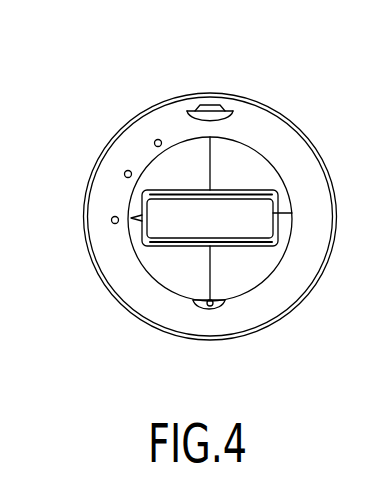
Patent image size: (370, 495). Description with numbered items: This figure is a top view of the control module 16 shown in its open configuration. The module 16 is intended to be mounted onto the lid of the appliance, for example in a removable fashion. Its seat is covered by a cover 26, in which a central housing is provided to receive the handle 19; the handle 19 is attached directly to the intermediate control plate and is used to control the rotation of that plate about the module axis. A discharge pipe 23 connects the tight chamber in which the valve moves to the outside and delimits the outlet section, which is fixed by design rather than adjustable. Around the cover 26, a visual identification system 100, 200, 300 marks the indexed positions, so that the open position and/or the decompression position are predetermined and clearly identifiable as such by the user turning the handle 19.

The module 16 is at (133, 110).
The handle 19 is at (250, 214).
The discharge pipe 23 is at (212, 108).
The cover 26 is at (122, 278).
The visual identification system 100 is at (111, 220).
The visual identification system 200 is at (124, 174).
The visual identification system 300 is at (154, 142).